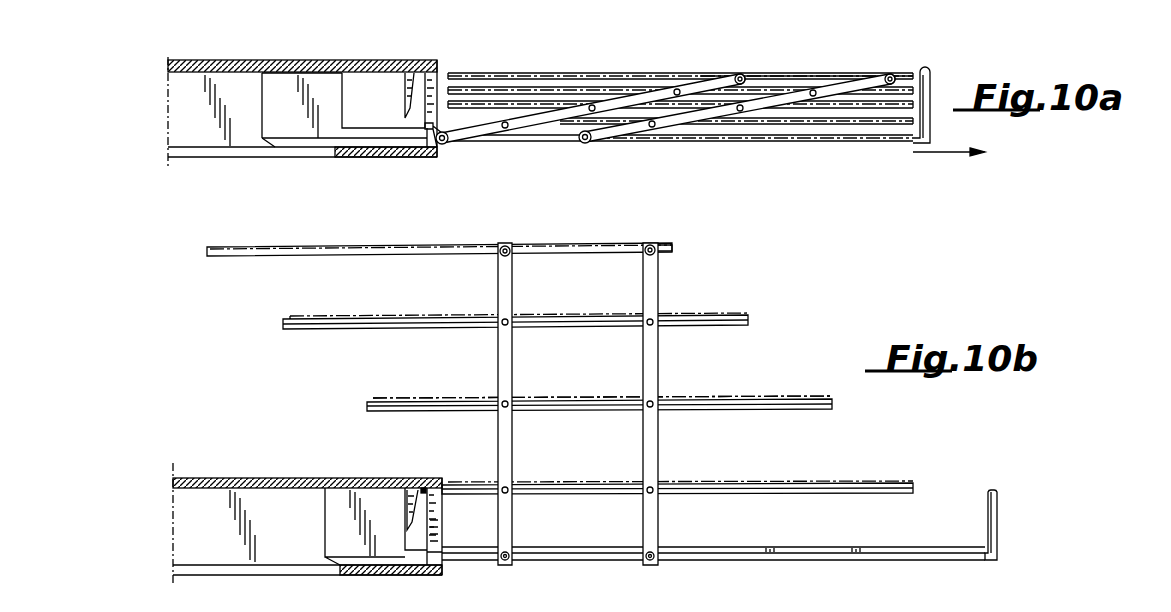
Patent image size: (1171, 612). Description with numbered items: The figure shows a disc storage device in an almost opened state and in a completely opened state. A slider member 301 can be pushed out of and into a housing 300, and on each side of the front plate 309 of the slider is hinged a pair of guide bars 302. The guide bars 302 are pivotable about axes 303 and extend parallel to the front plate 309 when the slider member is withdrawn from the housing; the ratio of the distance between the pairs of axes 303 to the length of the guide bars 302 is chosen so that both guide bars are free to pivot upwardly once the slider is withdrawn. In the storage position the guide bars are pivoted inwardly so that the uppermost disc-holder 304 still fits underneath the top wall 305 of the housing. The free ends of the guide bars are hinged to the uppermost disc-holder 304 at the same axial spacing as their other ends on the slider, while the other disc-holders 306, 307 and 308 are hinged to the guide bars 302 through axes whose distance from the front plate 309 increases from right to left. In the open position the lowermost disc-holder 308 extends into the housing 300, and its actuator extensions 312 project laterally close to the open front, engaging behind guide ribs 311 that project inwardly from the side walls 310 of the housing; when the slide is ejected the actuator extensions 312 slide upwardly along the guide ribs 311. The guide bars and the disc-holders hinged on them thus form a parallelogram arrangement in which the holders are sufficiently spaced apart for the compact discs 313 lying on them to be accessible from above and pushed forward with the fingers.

In FIG. 10A, the housing 300 is at (215, 57).
In FIG. 10B, the housing 300 is at (216, 476).
In FIG. 10A, the slider member 301 is at (693, 142).
In FIG. 10B, the slider member 301 is at (735, 561).
In FIG. 10A, the guide bars 302 is at (642, 100).
In FIG. 10B, the guide bars 302 is at (497, 373).
In FIG. 10A, the axes 303 is at (448, 142).
In FIG. 10B, the axes 303 is at (506, 562).
In FIG. 10A, the uppermost disc-holder 304 is at (545, 72).
In FIG. 10B, the uppermost disc-holder 304 is at (576, 253).
In FIG. 10A, the top wall 305 is at (288, 70).
In FIG. 10B, the top wall 305 is at (285, 486).
In FIG. 10A, the disc-holder 306 is at (596, 92).
In FIG. 10B, the disc-holder 306 is at (730, 325).
In FIG. 10A, the disc-holder 307 is at (843, 110).
In FIG. 10B, the disc-holder 307 is at (796, 411).
In FIG. 10A, the lowermost disc-holder 308 is at (880, 125).
In FIG. 10B, the lowermost disc-holder 308 is at (881, 483).
In FIG. 10A, the front plate 309 is at (931, 72).
In FIG. 10B, the front plate 309 is at (998, 517).
In FIG. 10A, the side walls 310 is at (370, 88).
In FIG. 10B, the side walls 310 is at (310, 508).
In FIG. 10A, the guide ribs 311 is at (437, 75).
In FIG. 10B, the guide ribs 311 is at (433, 540).
In FIG. 10A, the actuator extensions 312 is at (428, 143).
In FIG. 10B, the actuator extensions 312 is at (423, 487).
In FIG. 10A, the compact discs 313 is at (766, 76).
In FIG. 10B, the compact discs 313 is at (393, 397).